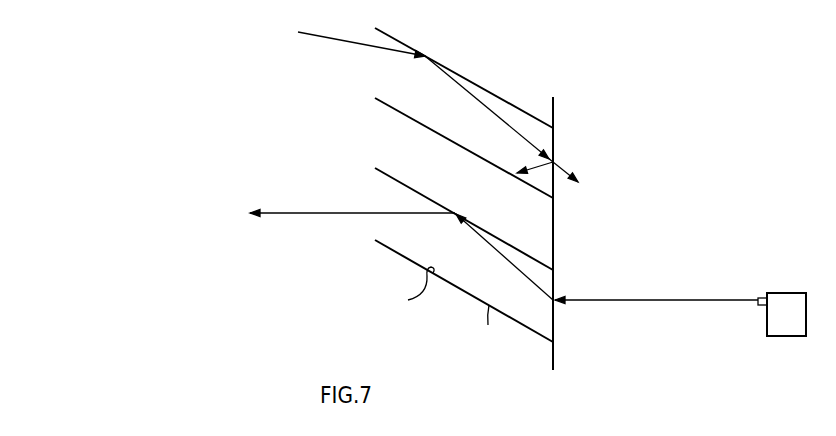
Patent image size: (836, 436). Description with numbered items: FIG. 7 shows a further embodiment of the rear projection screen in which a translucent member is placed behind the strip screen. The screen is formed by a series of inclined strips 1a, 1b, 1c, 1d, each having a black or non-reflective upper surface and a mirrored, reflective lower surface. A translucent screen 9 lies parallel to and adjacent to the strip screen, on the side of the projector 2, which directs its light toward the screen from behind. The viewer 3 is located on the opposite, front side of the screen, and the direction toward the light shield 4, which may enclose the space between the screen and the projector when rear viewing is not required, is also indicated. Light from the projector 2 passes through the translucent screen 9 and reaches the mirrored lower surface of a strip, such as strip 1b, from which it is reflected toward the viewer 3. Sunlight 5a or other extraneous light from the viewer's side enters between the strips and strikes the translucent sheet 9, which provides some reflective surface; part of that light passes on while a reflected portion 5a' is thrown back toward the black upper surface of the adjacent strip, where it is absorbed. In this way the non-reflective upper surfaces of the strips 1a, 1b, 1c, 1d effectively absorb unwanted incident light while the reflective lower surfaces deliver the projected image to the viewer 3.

The strip 1a is at (400, 254).
The strip 1b is at (404, 184).
The strip 1c is at (421, 124).
The strip 1d is at (461, 77).
The projector 2 is at (795, 292).
The viewer 3 is at (305, 255).
The light shield 4 is at (57, 215).
The sunlight 5a is at (392, 98).
The reflected sunlight 5a' is at (528, 159).
The translucent screen 9 is at (555, 213).